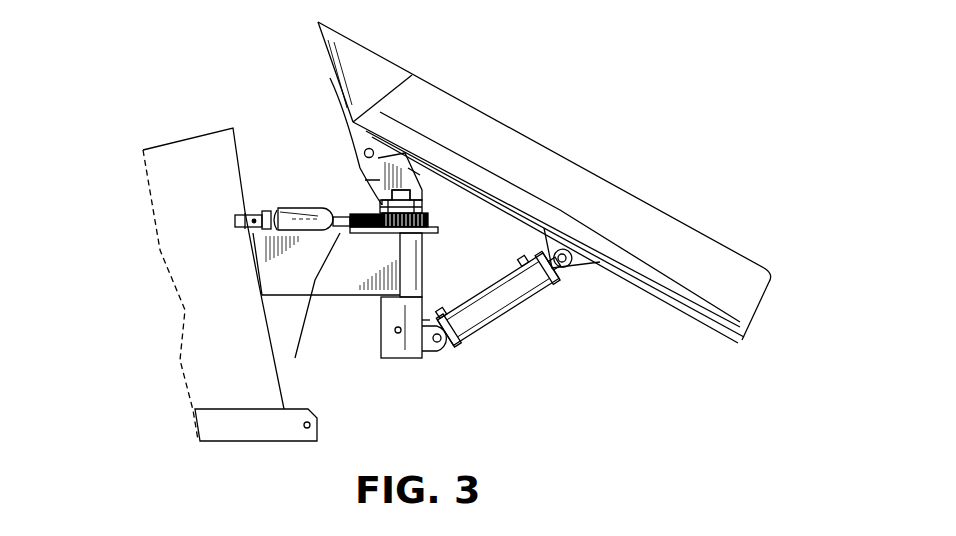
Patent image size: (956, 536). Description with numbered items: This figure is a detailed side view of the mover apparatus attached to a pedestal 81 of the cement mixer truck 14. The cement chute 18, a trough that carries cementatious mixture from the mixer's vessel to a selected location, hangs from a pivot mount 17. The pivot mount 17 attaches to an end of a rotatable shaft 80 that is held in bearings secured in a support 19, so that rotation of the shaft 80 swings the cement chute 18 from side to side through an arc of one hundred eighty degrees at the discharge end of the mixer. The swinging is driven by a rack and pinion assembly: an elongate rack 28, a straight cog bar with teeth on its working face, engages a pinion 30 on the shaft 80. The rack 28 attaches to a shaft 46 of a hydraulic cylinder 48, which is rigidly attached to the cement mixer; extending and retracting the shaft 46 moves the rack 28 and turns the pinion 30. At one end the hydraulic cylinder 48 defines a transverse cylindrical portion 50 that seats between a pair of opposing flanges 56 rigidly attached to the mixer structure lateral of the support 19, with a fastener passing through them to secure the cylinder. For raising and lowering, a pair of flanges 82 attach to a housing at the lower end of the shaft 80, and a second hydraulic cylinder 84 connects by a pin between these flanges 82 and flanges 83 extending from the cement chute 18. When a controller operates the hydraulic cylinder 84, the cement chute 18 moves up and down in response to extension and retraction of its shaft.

The cement mixer truck 14 is at (226, 433).
The pivot mount 17 is at (373, 213).
The cement chute 18 is at (660, 246).
The support 19 is at (360, 262).
The rack 28 is at (355, 210).
The pinion 30 is at (430, 221).
The shaft 46 is at (296, 360).
The hydraulic cylinder 48 is at (293, 217).
The cylindrical portion 50 is at (258, 232).
The flanges 56 is at (245, 230).
The rotatable shaft 80 is at (408, 168).
The pedestal 81 is at (173, 353).
The flanges 82 is at (428, 348).
The flanges 83 is at (573, 260).
The hydraulic cylinder 84 is at (500, 300).